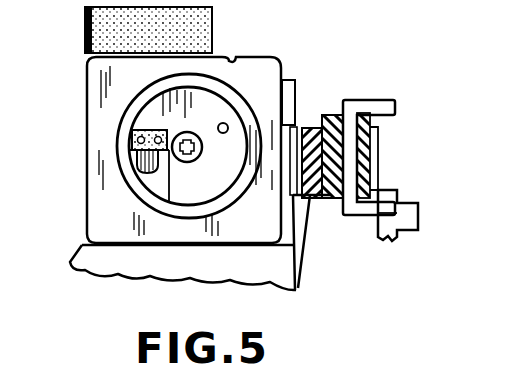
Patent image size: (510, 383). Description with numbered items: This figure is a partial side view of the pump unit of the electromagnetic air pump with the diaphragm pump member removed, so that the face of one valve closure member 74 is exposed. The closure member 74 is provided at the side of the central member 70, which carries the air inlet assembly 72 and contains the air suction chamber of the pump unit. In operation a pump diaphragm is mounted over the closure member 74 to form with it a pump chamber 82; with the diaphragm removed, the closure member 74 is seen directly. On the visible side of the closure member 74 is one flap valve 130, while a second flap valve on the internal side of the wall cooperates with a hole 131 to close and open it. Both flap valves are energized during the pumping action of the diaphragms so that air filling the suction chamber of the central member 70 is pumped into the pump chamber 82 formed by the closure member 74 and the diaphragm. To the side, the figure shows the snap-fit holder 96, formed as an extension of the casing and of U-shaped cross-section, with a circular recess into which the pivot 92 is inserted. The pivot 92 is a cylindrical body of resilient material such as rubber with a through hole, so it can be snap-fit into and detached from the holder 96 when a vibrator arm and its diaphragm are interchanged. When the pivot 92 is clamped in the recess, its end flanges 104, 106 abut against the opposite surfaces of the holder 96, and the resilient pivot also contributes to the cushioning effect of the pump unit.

The central member 70 is at (105, 100).
The air inlet assembly 72 is at (88, 32).
The valve closure member 74 is at (128, 198).
The pump chamber 82 is at (225, 182).
The pivot 92 is at (341, 100).
The snap-fit holder 96 is at (384, 152).
The end flange 104 is at (323, 200).
The end flange 106 is at (331, 118).
The flap valve 130 is at (133, 163).
The hole 131 is at (223, 128).